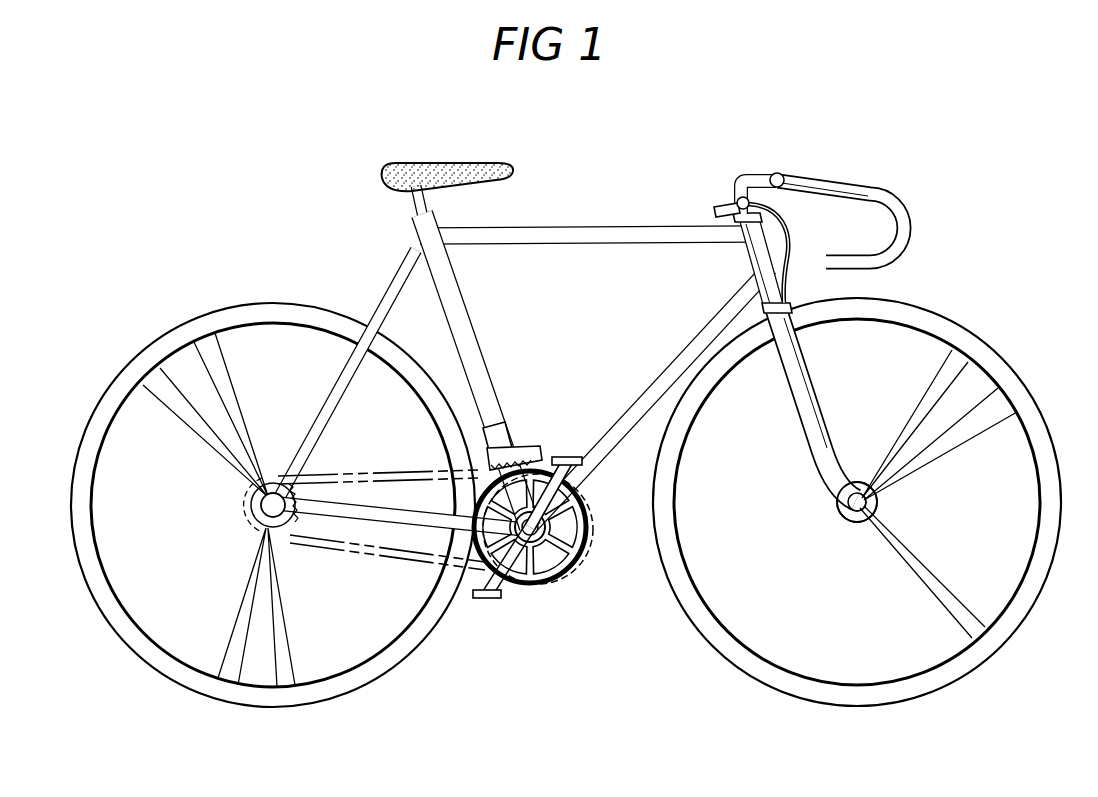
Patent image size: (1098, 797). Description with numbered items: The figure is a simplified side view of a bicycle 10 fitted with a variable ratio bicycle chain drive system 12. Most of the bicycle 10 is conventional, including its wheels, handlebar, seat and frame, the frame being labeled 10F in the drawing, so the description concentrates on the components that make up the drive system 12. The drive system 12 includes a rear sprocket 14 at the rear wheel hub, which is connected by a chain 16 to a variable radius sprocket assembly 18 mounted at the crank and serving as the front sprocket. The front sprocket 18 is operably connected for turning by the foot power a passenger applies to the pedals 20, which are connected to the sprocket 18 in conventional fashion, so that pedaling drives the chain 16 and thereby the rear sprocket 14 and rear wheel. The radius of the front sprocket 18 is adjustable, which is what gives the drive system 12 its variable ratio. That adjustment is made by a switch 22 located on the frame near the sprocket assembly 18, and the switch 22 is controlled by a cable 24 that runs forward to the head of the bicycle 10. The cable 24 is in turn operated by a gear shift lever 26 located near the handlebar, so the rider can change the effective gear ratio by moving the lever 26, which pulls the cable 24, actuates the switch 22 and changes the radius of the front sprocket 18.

The bicycle 10 is at (640, 667).
The frame 10F is at (484, 328).
The variable ratio bicycle chain drive system 12 is at (542, 592).
The rear sprocket 14 is at (253, 527).
The chain 16 is at (392, 478).
The variable radius sprocket assembly 18 is at (598, 538).
The pedals 20 is at (564, 457).
The switch 22 is at (528, 445).
The cable 24 is at (755, 250).
The gear shift lever 26 is at (716, 210).